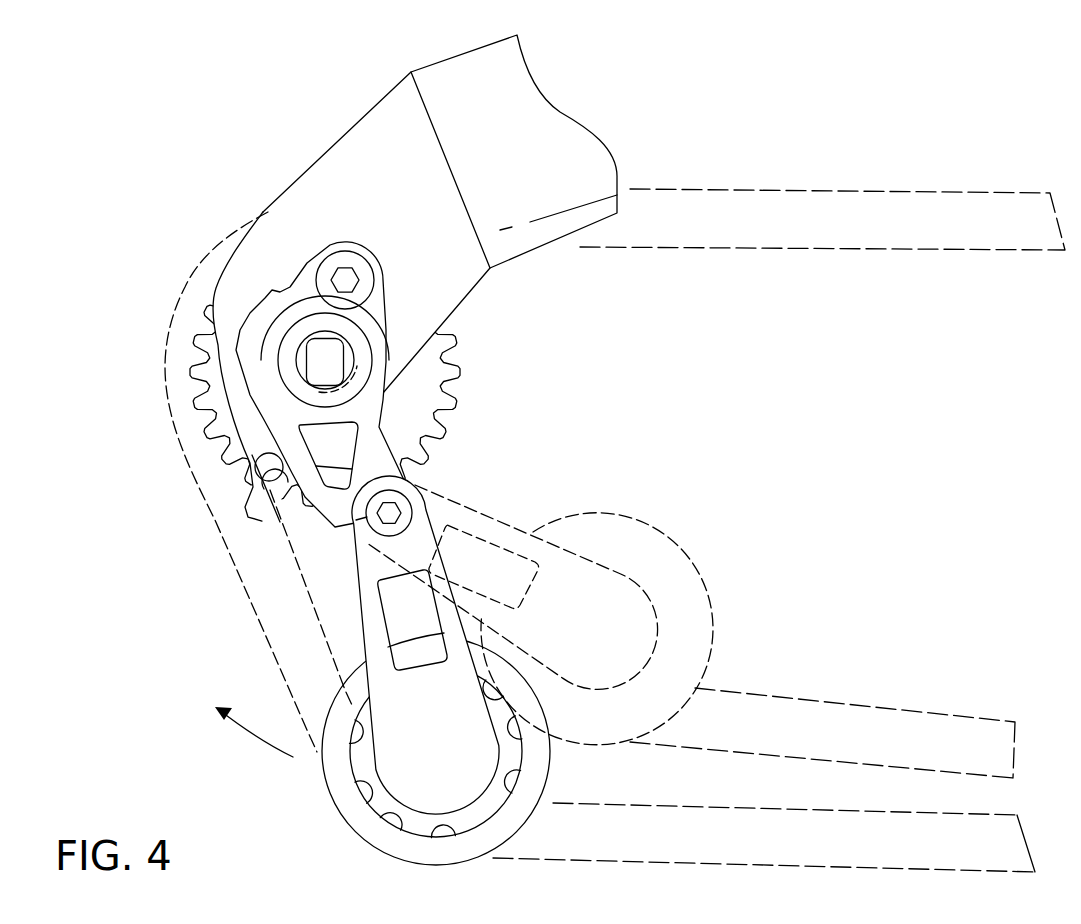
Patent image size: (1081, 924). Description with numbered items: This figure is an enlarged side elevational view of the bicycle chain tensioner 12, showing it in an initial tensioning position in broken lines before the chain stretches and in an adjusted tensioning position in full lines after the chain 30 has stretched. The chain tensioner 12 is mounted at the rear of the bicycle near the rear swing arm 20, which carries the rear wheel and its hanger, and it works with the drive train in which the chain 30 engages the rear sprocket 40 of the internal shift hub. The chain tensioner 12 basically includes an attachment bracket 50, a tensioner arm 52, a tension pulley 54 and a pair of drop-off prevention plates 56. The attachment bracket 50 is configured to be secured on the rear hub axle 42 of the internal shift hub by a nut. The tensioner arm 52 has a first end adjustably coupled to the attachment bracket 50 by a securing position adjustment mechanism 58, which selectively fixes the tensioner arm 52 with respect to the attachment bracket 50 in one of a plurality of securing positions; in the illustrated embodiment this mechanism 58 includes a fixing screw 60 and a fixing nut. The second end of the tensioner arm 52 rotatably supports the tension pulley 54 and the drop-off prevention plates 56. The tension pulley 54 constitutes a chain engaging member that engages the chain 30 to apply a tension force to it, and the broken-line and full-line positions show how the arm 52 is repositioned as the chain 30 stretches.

The bicycle chain tensioner 12 is at (333, 562).
The rear swing arm 20 is at (448, 58).
The chain 30 is at (838, 192).
The rear sprocket 40 is at (452, 372).
The rear hub axle 42 is at (330, 365).
The attachment bracket 50 is at (373, 424).
The tensioner arm 52 is at (363, 615).
The tension pulley 54 is at (380, 800).
The drop-off prevention plates 56 is at (382, 852).
The securing position adjustment mechanism 58 is at (413, 485).
The fixing screw 60 is at (367, 517).